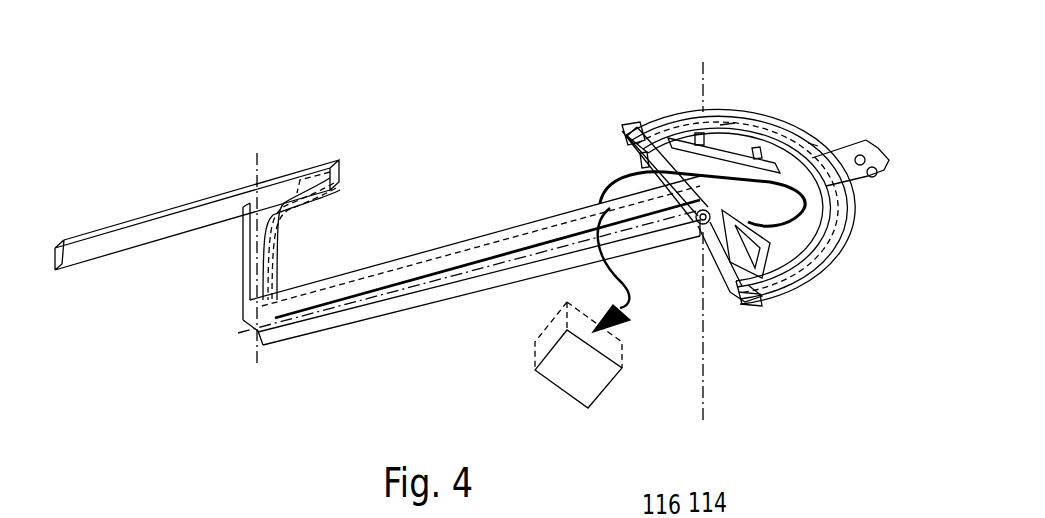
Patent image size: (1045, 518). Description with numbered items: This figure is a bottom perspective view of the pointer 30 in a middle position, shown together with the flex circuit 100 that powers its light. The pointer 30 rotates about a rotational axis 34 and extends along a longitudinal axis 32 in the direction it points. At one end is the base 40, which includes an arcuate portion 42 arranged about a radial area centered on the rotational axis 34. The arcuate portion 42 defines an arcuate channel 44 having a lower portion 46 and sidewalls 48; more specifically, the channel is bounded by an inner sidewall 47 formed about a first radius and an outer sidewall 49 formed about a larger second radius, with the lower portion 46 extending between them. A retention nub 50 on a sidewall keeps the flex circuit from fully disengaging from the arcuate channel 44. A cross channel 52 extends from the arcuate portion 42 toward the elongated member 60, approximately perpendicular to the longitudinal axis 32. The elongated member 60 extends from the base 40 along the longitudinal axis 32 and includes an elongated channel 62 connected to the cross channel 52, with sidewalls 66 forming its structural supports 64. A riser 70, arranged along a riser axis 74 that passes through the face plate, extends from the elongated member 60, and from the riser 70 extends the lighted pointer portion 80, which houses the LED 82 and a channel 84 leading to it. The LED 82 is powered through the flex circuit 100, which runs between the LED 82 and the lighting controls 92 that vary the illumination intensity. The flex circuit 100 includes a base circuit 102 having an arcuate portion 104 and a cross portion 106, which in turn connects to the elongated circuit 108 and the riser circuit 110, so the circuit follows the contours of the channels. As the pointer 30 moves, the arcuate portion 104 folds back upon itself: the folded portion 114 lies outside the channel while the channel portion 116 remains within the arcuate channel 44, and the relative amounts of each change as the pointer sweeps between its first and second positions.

The pointer 30 is at (463, 243).
The longitudinal axis 32 is at (236, 333).
The rotational axis 34 is at (704, 418).
The base 40 is at (845, 240).
The arcuate portion 42 is at (823, 218).
The arcuate channel 44 is at (803, 267).
The lower portion 46 is at (633, 143).
The inner sidewall 47 is at (797, 240).
The sidewalls 48 is at (681, 137).
The outer sidewall 49 is at (792, 280).
The nub 50 is at (703, 137).
The cross channel 52 is at (640, 172).
The elongated member 60 is at (433, 258).
The elongated channel 62 is at (447, 283).
The structural supports 64 is at (483, 284).
The sidewalls 66 is at (393, 277).
The riser 70 is at (242, 261).
The riser axis 74 is at (254, 363).
The lighted pointer portion 80 is at (152, 215).
The LED 82 is at (317, 188).
The channel 84 is at (297, 187).
The lighting controls 92 is at (578, 387).
The flex circuit 100 is at (660, 137).
The base circuit 102 is at (823, 198).
The arcuate portion 104 is at (743, 133).
The cross portion 106 is at (640, 137).
The elongated circuit 108 is at (397, 287).
The riser circuit 110 is at (266, 246).
The folded portion 114 is at (811, 136).
The channel portion 116 is at (723, 137).